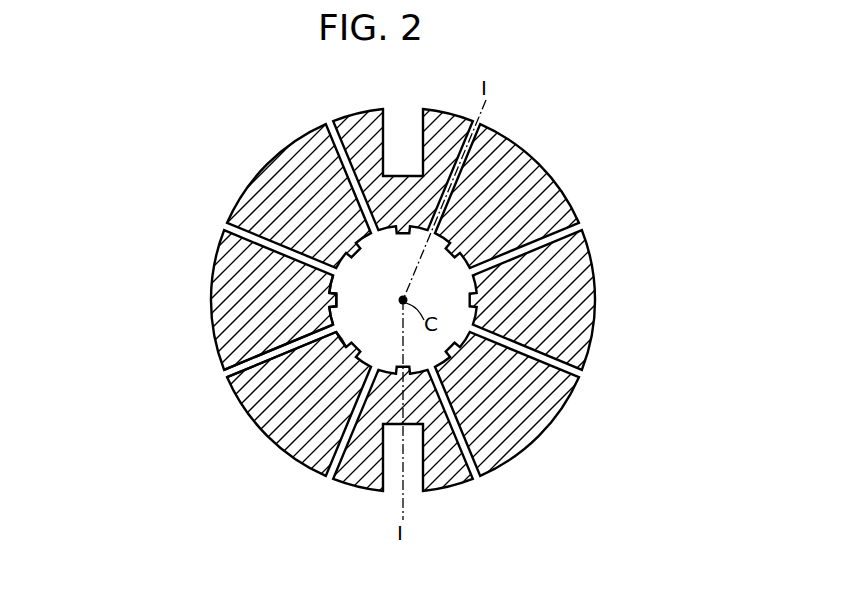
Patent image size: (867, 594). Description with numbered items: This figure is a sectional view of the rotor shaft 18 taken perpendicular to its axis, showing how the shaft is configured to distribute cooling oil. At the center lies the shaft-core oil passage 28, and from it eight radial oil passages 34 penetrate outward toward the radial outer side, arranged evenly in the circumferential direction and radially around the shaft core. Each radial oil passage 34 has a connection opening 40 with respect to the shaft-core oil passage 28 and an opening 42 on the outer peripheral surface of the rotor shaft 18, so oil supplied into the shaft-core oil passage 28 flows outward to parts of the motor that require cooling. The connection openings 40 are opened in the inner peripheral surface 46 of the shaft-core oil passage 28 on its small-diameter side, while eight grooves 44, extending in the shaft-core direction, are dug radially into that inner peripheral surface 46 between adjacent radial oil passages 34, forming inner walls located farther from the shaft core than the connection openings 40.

The rotor shaft 18 is at (433, 295).
The shaft-core oil passage 28 is at (398, 277).
The radial oil passage 34 is at (274, 346).
The connection opening 40 is at (338, 312).
The opening 42 is at (232, 376).
The groove 44 is at (349, 348).
The inner peripheral surface 46 is at (342, 337).